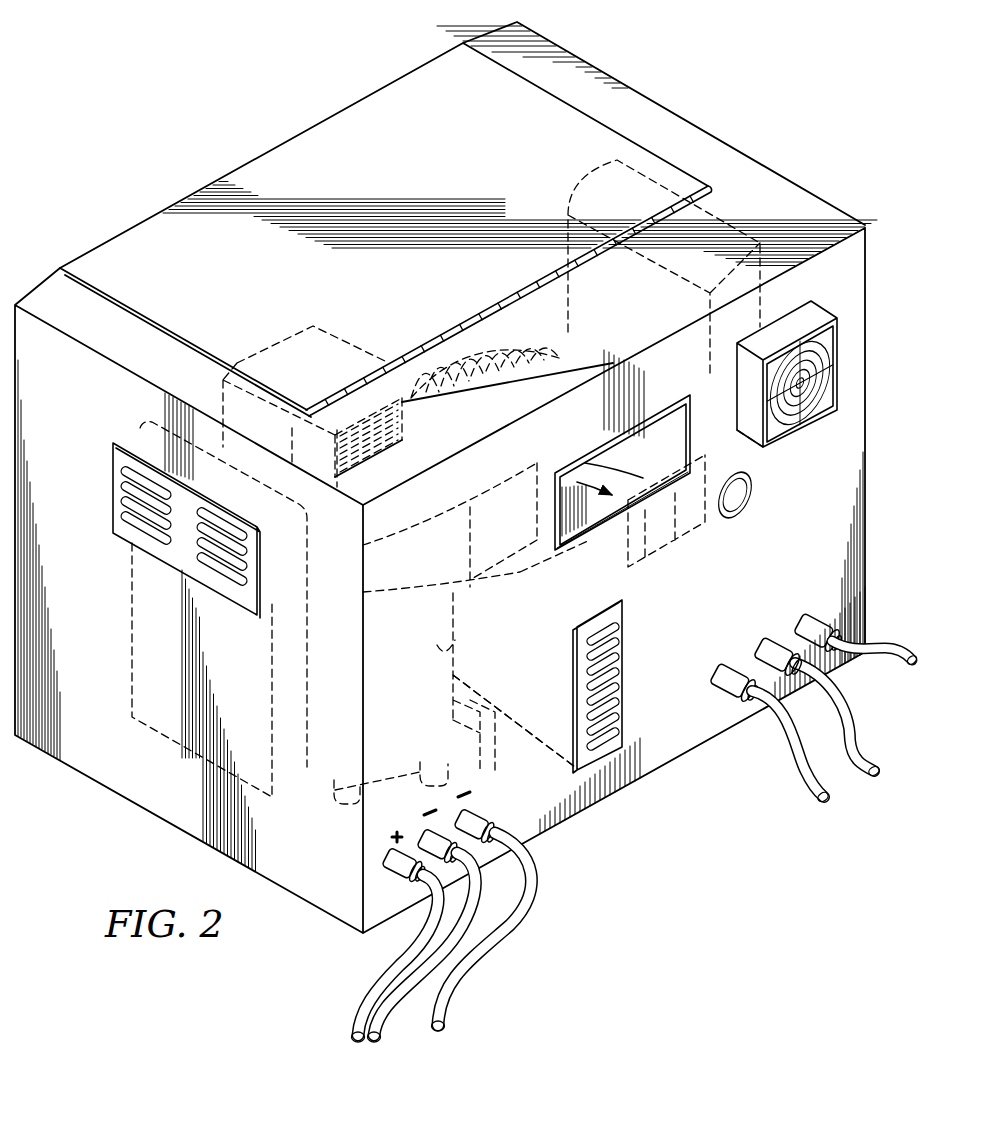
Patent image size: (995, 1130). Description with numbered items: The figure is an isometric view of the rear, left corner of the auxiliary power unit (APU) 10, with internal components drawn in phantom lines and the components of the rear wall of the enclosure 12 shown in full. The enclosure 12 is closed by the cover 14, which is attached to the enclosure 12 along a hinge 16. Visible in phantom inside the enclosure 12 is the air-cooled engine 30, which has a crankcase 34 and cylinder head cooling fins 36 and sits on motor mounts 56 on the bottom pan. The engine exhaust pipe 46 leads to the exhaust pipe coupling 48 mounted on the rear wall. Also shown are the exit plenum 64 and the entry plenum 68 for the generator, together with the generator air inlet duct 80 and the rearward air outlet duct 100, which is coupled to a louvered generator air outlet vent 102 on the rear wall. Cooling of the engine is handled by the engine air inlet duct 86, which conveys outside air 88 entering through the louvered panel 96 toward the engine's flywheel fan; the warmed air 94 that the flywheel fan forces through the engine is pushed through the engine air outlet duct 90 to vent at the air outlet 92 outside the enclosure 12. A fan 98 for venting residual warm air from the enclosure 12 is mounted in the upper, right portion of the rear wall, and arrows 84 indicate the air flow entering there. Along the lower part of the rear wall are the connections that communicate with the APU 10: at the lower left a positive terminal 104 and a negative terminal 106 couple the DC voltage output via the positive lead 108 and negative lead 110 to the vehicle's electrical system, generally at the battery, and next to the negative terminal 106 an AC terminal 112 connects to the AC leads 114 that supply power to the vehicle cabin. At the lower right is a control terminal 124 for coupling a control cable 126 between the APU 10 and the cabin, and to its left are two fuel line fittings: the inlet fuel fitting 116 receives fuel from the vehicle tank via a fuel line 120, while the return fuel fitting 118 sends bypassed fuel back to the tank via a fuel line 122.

The auxiliary power unit 10 is at (178, 131).
The enclosure 12 is at (45, 302).
The cover 14 is at (390, 95).
The hinge 16 is at (447, 328).
The air-cooled engine 30 is at (277, 348).
The crankcase 34 is at (455, 638).
The cylinder head cooling fins 36 is at (415, 452).
The engine exhaust pipe 46 is at (486, 328).
The exhaust pipe coupling 48 is at (756, 498).
The motor mounts 56 is at (345, 782).
The exit plenum 64 is at (500, 572).
The entry plenum 68 is at (689, 554).
The generator air inlet duct 80 is at (610, 165).
The air inlet flow 84 is at (782, 113).
The engine air inlet duct 86 is at (143, 436).
The outside air 88 is at (62, 549).
The engine air outlet duct 90 is at (665, 396).
The air outlet 92 is at (600, 530).
The warmed air 94 is at (584, 476).
The louvered panel 96 is at (245, 600).
The fan 98 is at (778, 435).
The rearward air outlet duct 100 is at (545, 735).
The louvered generator air outlet vent 102 is at (628, 606).
The positive terminal 104 is at (385, 863).
The negative terminal 106 is at (367, 836).
The positive lead 108 is at (350, 1022).
The negative lead 110 is at (378, 1042).
The AC terminal 112 is at (478, 822).
The AC leads 114 is at (545, 888).
The inlet fuel fitting 116 is at (716, 699).
The return fuel fitting 118 is at (766, 739).
The fuel line 120 is at (798, 794).
The fuel line 122 is at (854, 716).
The control terminal 124 is at (820, 615).
The control cable 126 is at (887, 640).